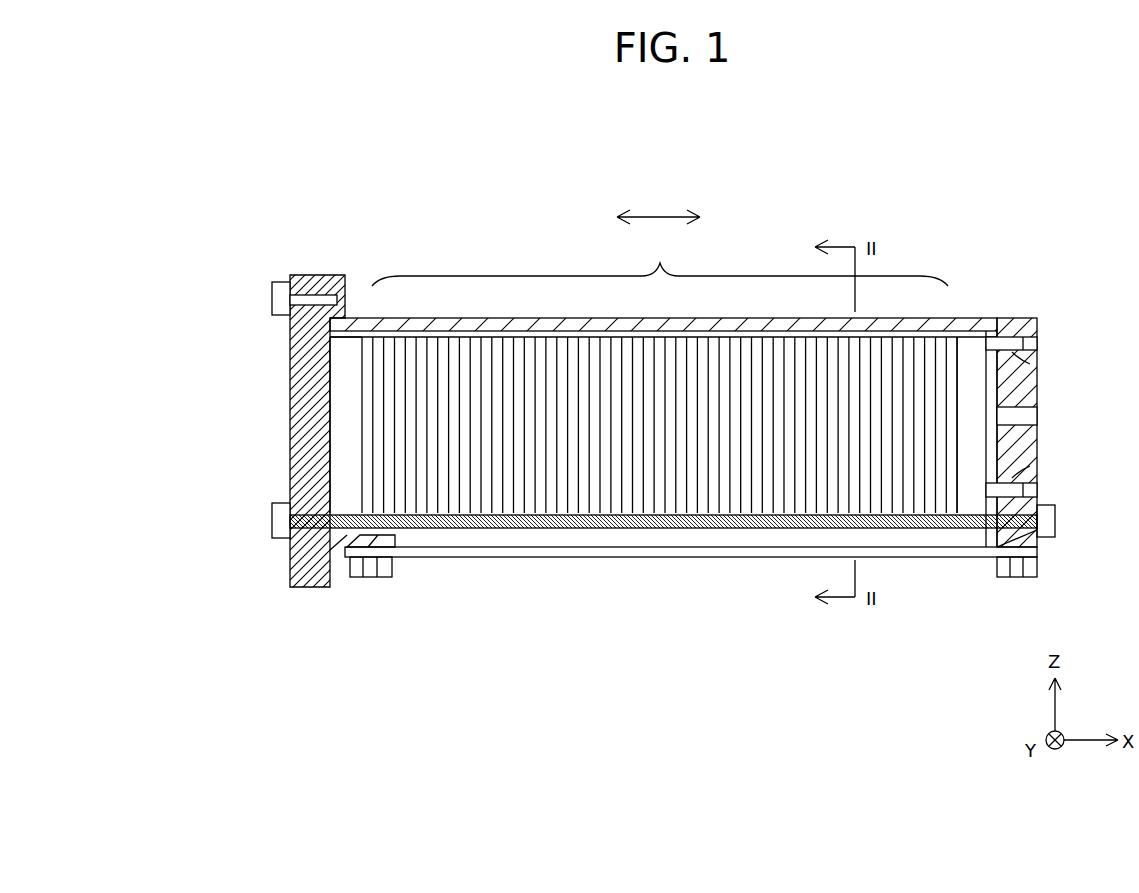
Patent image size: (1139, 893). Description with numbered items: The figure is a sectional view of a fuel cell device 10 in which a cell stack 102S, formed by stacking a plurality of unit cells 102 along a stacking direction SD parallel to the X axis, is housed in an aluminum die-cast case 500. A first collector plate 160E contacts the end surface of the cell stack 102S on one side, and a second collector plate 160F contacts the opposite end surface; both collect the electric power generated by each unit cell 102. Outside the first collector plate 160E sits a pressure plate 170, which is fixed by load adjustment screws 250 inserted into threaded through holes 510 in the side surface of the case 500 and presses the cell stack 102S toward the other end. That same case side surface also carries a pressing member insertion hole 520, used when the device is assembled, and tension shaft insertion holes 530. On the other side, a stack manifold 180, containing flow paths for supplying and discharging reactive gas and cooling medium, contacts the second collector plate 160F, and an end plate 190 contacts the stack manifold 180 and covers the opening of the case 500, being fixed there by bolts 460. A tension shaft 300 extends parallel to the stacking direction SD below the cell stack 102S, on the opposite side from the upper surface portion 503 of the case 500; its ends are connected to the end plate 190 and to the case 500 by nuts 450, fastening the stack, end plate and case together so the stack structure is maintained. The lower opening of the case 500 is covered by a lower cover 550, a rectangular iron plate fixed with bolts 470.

The fuel cell device 10 is at (258, 212).
The unit cell 102 is at (656, 320).
The cell stack 102S is at (660, 258).
The second collector plate 160F is at (346, 316).
The first collector plate 160E is at (946, 530).
The pressure plate 170 is at (974, 512).
The stack manifold 180 is at (340, 452).
The end plate 190 is at (290, 411).
The load adjustment screw 250 is at (1012, 352).
The tension shaft 300 is at (744, 530).
The nut 450 is at (272, 519).
The bolt 460 is at (272, 299).
The bolt 470 is at (366, 578).
The case 500 is at (1037, 318).
The upper surface portion 503 is at (990, 317).
The through hole 510 is at (1040, 343).
The pressing member insertion hole 520 is at (1035, 416).
The tension shaft insertion hole 530 is at (1012, 534).
The lower cover 550 is at (570, 558).
The stacking direction SD is at (658, 205).